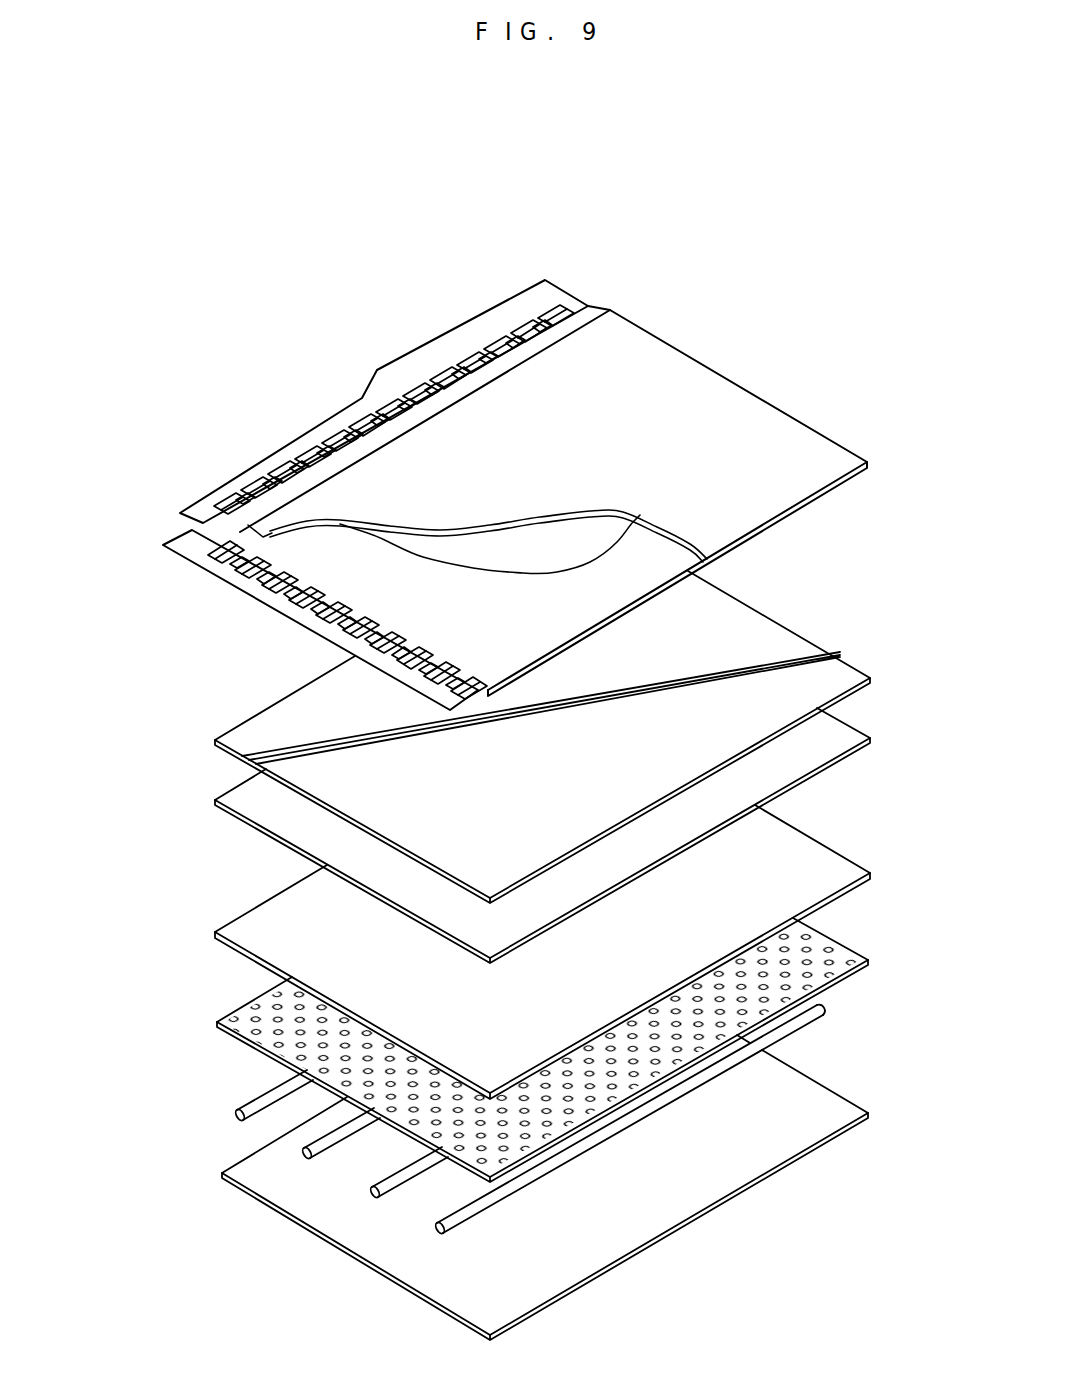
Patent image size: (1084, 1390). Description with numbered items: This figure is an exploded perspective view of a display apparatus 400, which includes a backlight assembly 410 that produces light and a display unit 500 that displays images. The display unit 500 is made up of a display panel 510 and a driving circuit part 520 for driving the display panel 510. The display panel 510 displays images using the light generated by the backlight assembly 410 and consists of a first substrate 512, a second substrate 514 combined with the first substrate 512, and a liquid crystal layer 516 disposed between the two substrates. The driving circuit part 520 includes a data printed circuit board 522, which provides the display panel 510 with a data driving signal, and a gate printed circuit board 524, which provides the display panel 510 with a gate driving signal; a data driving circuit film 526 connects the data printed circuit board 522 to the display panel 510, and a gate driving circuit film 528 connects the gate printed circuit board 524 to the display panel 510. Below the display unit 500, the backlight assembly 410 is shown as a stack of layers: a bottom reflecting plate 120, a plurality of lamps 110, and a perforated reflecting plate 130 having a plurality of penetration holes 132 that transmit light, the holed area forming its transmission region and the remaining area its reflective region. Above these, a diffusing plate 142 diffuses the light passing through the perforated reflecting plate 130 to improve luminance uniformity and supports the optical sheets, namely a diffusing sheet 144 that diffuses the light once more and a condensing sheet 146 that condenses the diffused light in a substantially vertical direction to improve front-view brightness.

The display apparatus 400 is at (688, 243).
The display unit 500 is at (212, 463).
The display panel 510 is at (813, 403).
The first substrate 512 is at (603, 593).
The second substrate 514 is at (730, 517).
The liquid crystal layer 516 is at (548, 540).
The driving circuit part 520 is at (160, 537).
The data printed circuit board 522 is at (447, 343).
The gate printed circuit board 524 is at (200, 555).
The data driving circuit film 526 is at (503, 340).
The gate driving circuit film 528 is at (240, 556).
The backlight assembly 410 is at (887, 1122).
The condensing sheet 146 is at (215, 742).
The diffusing sheet 144 is at (215, 802).
The diffusing plate 142 is at (263, 915).
The perforated reflecting plate 130 is at (240, 1033).
The penetration holes 132 is at (236, 1023).
The lamps 110 is at (243, 1108).
The bottom reflecting plate 120 is at (225, 1175).